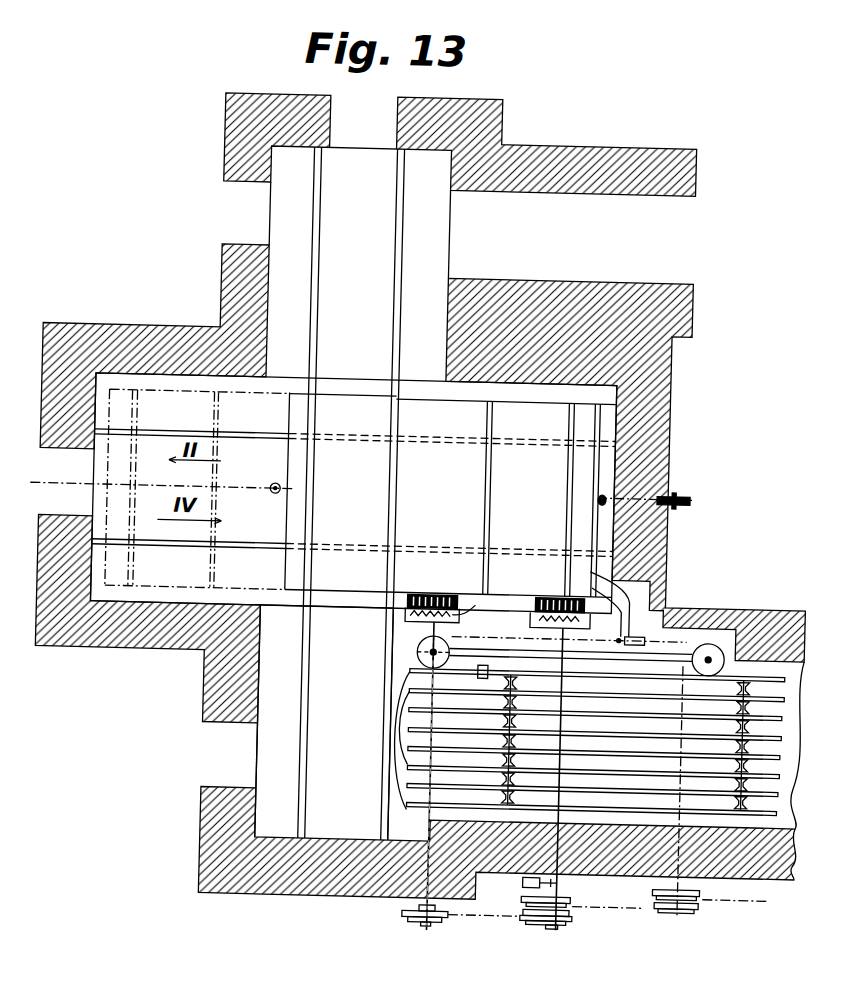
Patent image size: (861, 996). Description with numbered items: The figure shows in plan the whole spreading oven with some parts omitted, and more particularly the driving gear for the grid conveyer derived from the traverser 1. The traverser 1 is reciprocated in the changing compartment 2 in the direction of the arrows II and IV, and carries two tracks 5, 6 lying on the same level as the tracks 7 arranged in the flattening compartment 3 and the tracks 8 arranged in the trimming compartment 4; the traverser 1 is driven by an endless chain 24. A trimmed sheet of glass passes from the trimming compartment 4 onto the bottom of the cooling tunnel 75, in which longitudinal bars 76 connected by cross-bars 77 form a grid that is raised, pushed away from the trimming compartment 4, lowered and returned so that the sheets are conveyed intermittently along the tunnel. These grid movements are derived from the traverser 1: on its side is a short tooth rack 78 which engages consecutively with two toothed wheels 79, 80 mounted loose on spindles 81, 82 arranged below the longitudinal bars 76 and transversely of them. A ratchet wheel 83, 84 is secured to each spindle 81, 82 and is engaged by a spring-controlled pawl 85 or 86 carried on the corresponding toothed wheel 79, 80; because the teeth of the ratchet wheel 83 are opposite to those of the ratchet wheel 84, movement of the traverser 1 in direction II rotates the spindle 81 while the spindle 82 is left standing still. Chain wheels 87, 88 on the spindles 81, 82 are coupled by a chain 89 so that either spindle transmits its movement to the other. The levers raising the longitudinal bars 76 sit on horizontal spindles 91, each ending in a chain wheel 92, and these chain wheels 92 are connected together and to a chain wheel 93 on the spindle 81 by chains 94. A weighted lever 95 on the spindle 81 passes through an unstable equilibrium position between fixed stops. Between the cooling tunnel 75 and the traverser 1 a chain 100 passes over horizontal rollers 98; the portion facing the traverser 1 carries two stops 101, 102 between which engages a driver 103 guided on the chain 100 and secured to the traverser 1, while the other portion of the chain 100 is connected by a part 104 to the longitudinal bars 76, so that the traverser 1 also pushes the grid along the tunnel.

The traverser 1 is at (292, 575).
The changing compartment 2 is at (152, 387).
The flattening compartment 3 is at (268, 215).
The trimming compartment 4 is at (271, 755).
The track 5 is at (212, 416).
The track 6 is at (567, 490).
The track 7 is at (392, 246).
The track 8 is at (388, 741).
The endless chain 24 is at (52, 493).
The cooling tunnel 75 is at (751, 655).
The longitudinal bars 76 is at (400, 740).
The cross-bars 77 is at (505, 742).
The tooth rack 78 is at (586, 595).
The toothed wheel 79 is at (546, 600).
The toothed wheel 80 is at (410, 595).
The spindle 81 is at (567, 818).
The spindle 82 is at (437, 818).
The ratchet wheel 83 is at (548, 612).
The ratchet wheel 84 is at (474, 605).
The pawl 85 is at (553, 595).
The pawl 86 is at (440, 610).
The chain wheel 87 is at (550, 924).
The chain wheel 88 is at (420, 924).
The chain 89 is at (468, 916).
The horizontal spindles 91 is at (688, 819).
The chain wheel 92 is at (710, 903).
The chain wheel 93 is at (538, 897).
The chains 94 is at (626, 905).
The weighted lever 95 is at (532, 880).
The horizontal roller 98 is at (710, 636).
The chain 100 is at (474, 644).
The stop 101 is at (606, 632).
The stop 102 is at (656, 636).
The driver 103 is at (618, 630).
The connecting part 104 is at (488, 664).